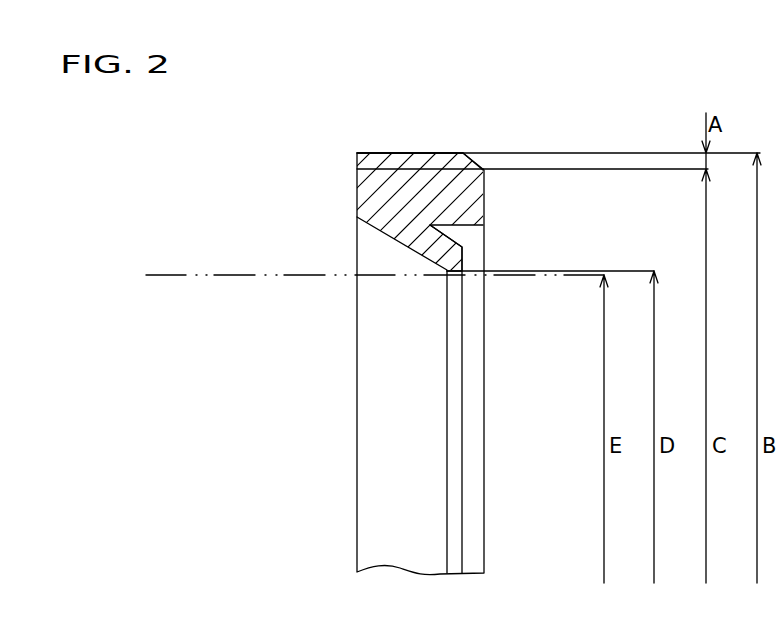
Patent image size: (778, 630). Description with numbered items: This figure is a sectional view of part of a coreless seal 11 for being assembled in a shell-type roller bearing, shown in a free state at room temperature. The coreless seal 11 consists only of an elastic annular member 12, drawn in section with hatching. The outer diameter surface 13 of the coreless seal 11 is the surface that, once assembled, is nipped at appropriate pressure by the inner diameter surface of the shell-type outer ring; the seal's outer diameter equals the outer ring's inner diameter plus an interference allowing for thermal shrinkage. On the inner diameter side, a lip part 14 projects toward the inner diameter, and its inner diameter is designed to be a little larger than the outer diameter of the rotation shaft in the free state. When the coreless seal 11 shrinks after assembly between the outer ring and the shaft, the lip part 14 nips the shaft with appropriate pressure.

The coreless seal 11 is at (491, 132).
The elastic annular member 12 is at (380, 202).
The outer diameter surface 13 is at (398, 153).
The lip part 14 is at (433, 256).